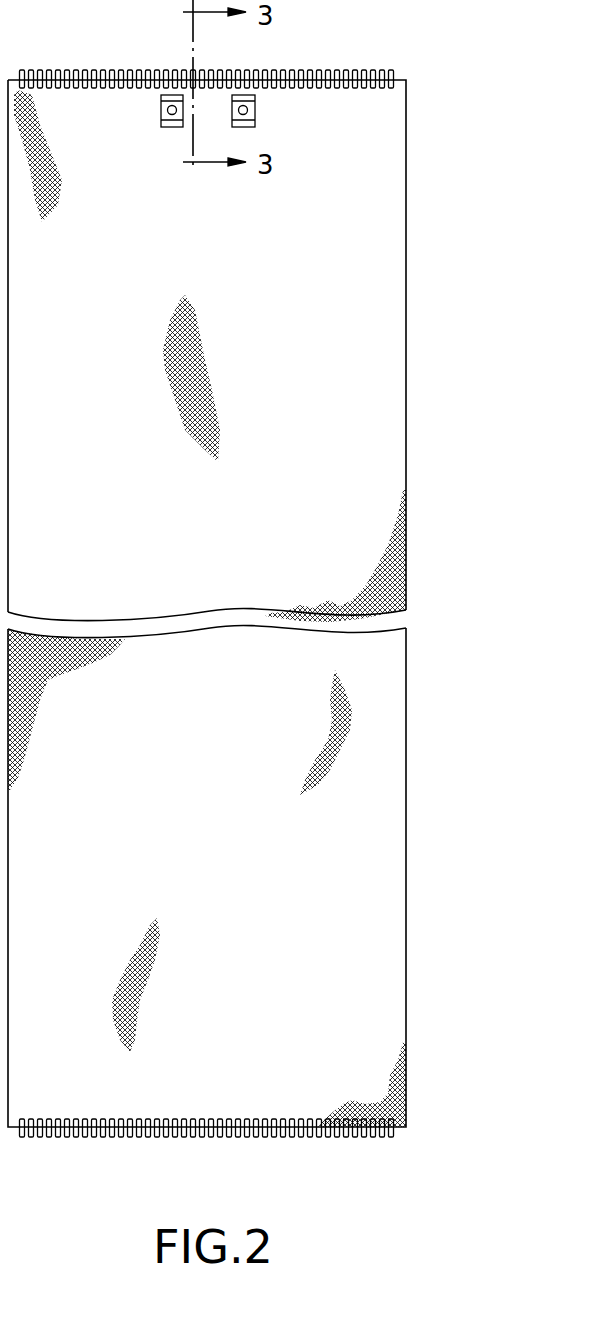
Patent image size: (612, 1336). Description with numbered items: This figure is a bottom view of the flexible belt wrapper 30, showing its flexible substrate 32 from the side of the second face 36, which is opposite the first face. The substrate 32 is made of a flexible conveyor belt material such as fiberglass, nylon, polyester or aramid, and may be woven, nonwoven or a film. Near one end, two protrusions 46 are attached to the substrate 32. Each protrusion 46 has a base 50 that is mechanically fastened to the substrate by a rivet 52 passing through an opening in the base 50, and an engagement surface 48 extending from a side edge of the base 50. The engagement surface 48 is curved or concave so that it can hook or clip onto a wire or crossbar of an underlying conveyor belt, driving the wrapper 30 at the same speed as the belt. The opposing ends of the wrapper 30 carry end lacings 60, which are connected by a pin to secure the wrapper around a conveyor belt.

The flexible belt wrapper 30 is at (422, 1027).
The flexible substrate 32 is at (375, 845).
The second face 36 is at (360, 423).
The protrusion 46 is at (150, 110).
The engagement surface 48 is at (164, 95).
The base 50 is at (263, 116).
The rivet 52 is at (247, 110).
The end lacing 60 is at (322, 1136).